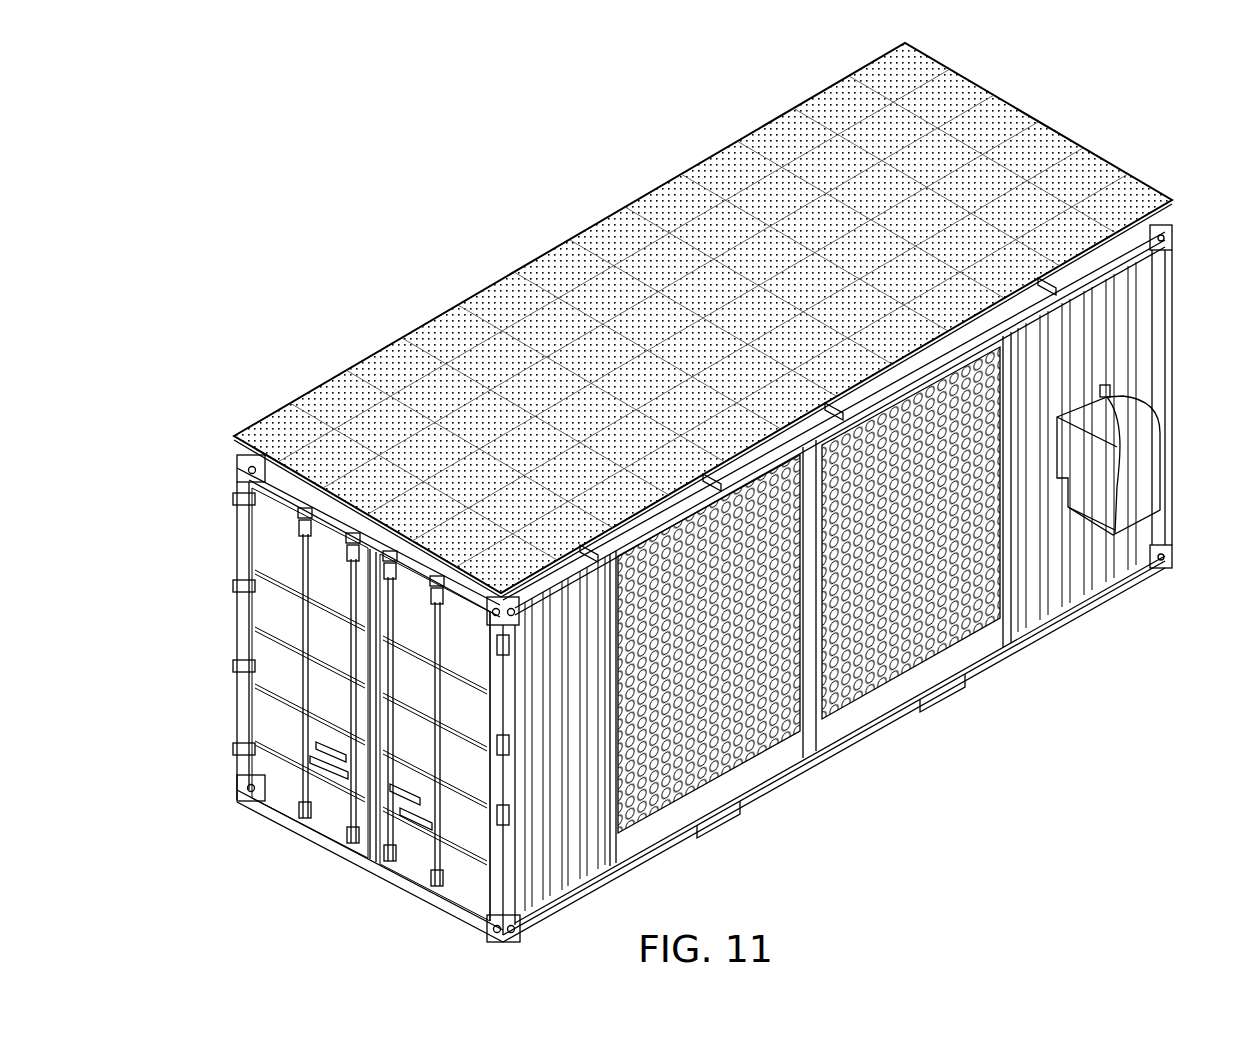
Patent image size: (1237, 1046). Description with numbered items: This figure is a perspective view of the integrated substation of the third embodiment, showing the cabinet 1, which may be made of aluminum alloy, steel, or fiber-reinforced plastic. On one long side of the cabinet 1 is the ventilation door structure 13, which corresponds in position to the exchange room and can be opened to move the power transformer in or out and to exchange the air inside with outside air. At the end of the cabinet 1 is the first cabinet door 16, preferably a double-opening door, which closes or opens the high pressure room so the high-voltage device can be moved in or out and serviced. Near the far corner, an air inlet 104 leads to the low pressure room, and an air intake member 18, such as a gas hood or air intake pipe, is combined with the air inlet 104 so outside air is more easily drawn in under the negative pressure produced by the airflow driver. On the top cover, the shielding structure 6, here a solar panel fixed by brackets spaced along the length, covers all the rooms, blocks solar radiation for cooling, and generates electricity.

The cabinet 1 is at (232, 536).
The shielding structure 6 is at (460, 291).
The ventilation door structure 13 is at (748, 748).
The first cabinet door 16 is at (276, 726).
The air intake member 18 is at (1150, 492).
The air inlet 104 is at (1107, 384).